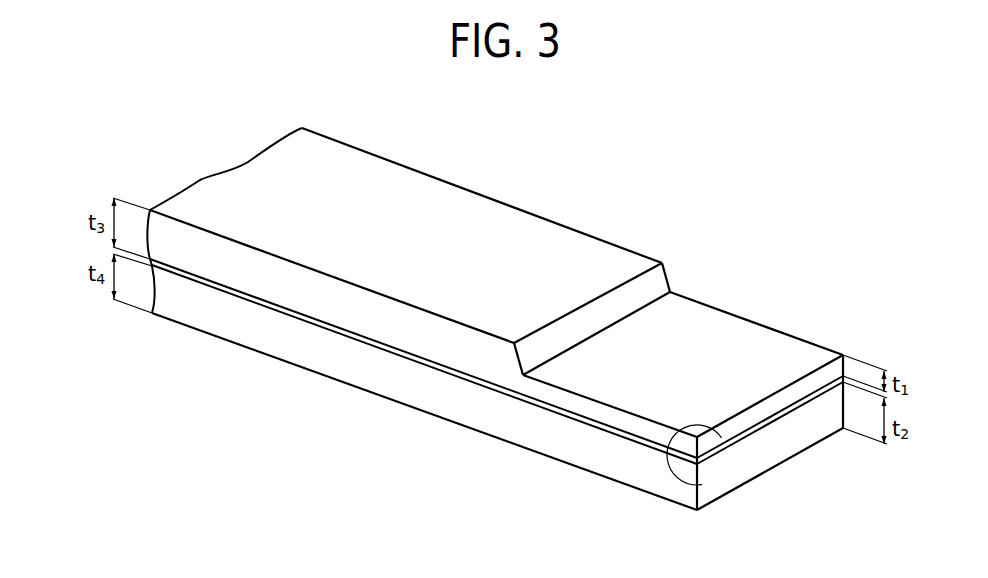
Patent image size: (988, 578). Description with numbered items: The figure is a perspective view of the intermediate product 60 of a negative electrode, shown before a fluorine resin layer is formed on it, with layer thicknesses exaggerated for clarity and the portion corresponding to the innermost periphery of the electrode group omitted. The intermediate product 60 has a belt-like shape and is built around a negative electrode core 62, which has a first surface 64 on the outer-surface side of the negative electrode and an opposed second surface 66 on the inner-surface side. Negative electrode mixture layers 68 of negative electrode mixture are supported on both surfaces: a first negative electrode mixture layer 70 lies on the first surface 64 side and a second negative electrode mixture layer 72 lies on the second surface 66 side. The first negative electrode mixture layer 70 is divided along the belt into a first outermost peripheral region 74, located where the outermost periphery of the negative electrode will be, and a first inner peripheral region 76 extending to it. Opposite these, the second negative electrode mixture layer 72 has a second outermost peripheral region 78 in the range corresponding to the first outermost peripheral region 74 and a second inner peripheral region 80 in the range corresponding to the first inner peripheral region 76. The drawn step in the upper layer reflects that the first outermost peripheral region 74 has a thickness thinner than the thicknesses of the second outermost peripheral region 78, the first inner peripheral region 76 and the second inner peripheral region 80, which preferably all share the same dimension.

The intermediate product 60 is at (699, 212).
The negative electrode core 62 is at (792, 412).
The first surface 64 is at (723, 448).
The second surface 66 is at (703, 488).
The negative electrode mixture layers 68 is at (212, 430).
The first negative electrode mixture layer 70 is at (202, 255).
The second negative electrode mixture layer 72 is at (237, 321).
The first outermost peripheral region 74 is at (680, 291).
The first inner peripheral region 76 is at (308, 126).
The second outermost peripheral region 78 is at (685, 514).
The second inner peripheral region 80 is at (502, 447).